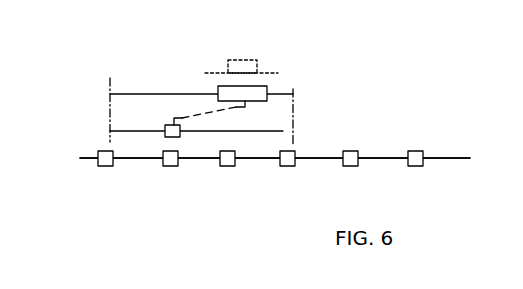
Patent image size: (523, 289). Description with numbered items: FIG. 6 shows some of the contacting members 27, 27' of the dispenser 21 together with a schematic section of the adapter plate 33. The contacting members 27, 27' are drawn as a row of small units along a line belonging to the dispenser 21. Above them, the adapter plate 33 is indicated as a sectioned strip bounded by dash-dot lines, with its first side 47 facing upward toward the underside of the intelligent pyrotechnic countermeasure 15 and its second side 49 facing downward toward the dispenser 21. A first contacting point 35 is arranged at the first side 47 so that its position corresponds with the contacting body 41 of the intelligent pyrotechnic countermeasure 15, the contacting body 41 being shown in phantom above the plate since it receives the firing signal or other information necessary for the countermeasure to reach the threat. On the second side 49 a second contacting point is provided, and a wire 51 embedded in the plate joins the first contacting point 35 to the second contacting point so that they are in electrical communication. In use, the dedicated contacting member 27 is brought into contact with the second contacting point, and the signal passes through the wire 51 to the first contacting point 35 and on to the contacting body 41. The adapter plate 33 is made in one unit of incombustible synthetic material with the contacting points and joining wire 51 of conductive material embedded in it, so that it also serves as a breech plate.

The intelligent pyrotechnic countermeasure 15 is at (258, 132).
The dispenser 21 is at (327, 160).
The contacting member 27 is at (260, 192).
The contacting member 27' is at (260, 192).
The adapter plate 33 is at (120, 94).
The first contacting point 35 is at (267, 101).
The contacting body 41 is at (263, 62).
The first side 47 is at (122, 78).
The second side 49 is at (132, 143).
The wire 51 is at (192, 113).